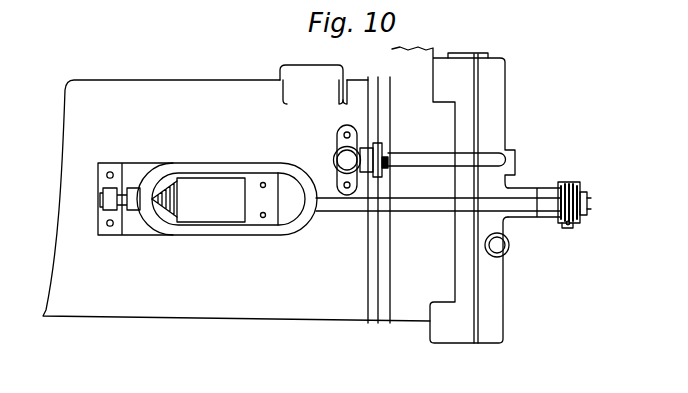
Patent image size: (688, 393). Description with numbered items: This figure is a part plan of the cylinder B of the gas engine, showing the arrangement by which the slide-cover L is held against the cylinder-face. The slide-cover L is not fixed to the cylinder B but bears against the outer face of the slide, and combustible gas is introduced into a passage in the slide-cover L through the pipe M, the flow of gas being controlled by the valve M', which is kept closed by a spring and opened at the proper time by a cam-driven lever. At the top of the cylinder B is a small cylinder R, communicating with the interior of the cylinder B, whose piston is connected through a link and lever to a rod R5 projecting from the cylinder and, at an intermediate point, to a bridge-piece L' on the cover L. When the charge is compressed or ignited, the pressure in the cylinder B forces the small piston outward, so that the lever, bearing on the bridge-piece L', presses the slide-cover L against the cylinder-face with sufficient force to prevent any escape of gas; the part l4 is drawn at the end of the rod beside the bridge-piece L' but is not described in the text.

The cylinder B is at (236, 194).
The slide-cover L is at (453, 195).
The pipe M is at (439, 160).
The valve M' is at (354, 160).
The small cylinder R is at (207, 199).
The rod R5 is at (438, 199).
The bridge-piece L' is at (544, 200).
The nut l4 is at (603, 193).